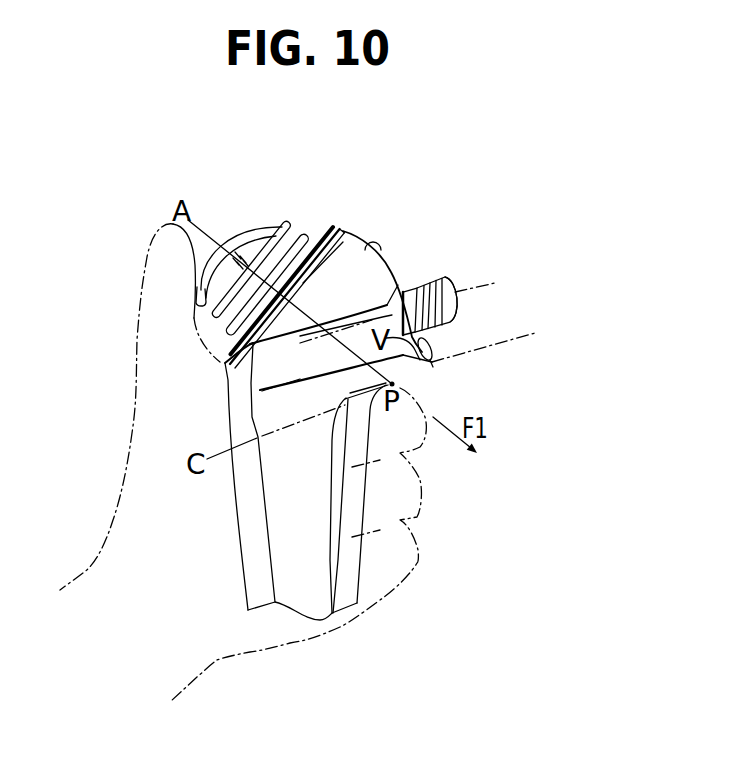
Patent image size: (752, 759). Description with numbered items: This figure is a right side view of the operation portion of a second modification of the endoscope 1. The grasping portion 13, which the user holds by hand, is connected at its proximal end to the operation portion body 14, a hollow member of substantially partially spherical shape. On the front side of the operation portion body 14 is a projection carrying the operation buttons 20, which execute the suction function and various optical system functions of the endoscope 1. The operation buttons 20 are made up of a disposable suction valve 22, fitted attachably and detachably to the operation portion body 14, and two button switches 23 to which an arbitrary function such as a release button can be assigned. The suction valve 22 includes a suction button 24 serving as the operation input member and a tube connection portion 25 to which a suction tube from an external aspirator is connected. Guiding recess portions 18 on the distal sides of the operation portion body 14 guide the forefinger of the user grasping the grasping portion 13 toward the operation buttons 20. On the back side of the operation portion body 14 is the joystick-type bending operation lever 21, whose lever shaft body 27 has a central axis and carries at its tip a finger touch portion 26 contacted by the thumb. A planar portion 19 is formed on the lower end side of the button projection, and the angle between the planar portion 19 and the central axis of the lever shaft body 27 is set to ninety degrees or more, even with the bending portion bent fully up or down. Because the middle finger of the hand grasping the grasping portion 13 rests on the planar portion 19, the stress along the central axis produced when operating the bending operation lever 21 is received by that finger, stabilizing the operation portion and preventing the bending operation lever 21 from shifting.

The endoscope 1 is at (298, 184).
The grasping portion 13 is at (245, 563).
The operation portion body 14 is at (350, 228).
The guiding recess portion 18 is at (225, 363).
The planar portion 19 is at (415, 364).
The operation buttons 20 is at (520, 173).
The bending operation lever 21 is at (251, 216).
The suction valve 22 is at (451, 266).
The button switches 23 is at (433, 340).
The suction button 24 is at (460, 294).
The tube connection portion 25 is at (374, 240).
The finger touch portion 26 is at (198, 289).
The lever shaft body 27 is at (242, 254).